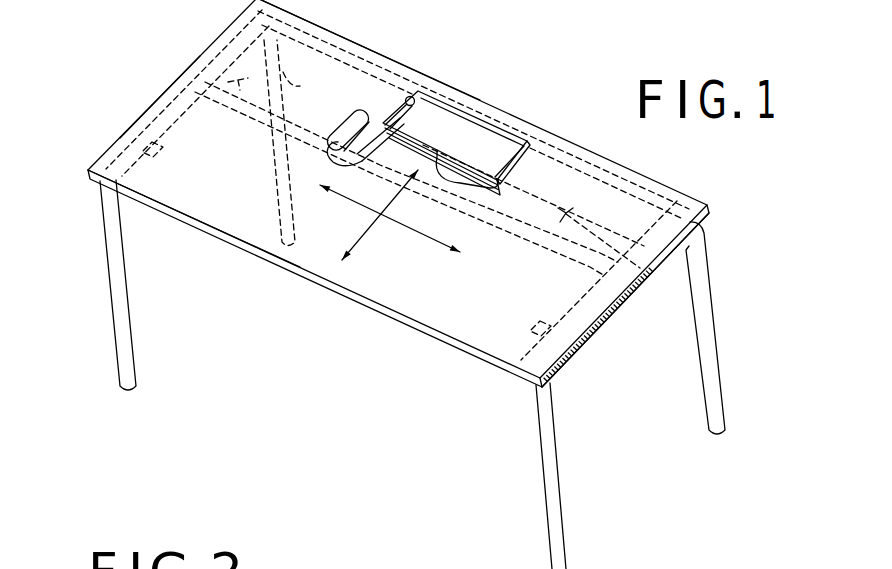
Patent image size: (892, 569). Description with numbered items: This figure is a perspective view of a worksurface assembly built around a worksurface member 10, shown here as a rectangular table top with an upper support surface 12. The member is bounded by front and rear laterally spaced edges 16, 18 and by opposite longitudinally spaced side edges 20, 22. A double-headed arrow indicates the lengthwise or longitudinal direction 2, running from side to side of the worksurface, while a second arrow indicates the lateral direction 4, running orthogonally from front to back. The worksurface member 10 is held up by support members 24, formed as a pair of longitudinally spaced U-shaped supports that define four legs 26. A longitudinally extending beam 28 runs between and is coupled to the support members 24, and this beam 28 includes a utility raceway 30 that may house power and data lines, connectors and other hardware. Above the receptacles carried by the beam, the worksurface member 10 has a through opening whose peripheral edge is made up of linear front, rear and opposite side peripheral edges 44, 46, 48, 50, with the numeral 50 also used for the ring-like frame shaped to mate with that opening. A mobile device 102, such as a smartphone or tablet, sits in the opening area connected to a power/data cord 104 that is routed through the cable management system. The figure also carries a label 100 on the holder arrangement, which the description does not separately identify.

The lengthwise direction 2 is at (400, 224).
The lateral direction 4 is at (392, 198).
The worksurface member 10 is at (512, 291).
The upper support surface 12 is at (217, 201).
The front edge 16 is at (173, 211).
The rear edge 18 is at (345, 36).
The side edge 20 is at (146, 112).
The side edge 22 is at (604, 313).
The support members 24 is at (132, 146).
The legs 26 is at (113, 320).
The longitudinally extending beam 28 is at (566, 212).
The utility raceway 30 is at (283, 72).
The front peripheral edge 44 is at (456, 169).
The rear peripheral edge 46 is at (480, 115).
The side peripheral edge 48 is at (406, 99).
The side peripheral edge 50 is at (521, 162).
The portable device holder 100 is at (405, 125).
The mobile device 102 is at (332, 123).
The power/data cord 104 is at (327, 158).